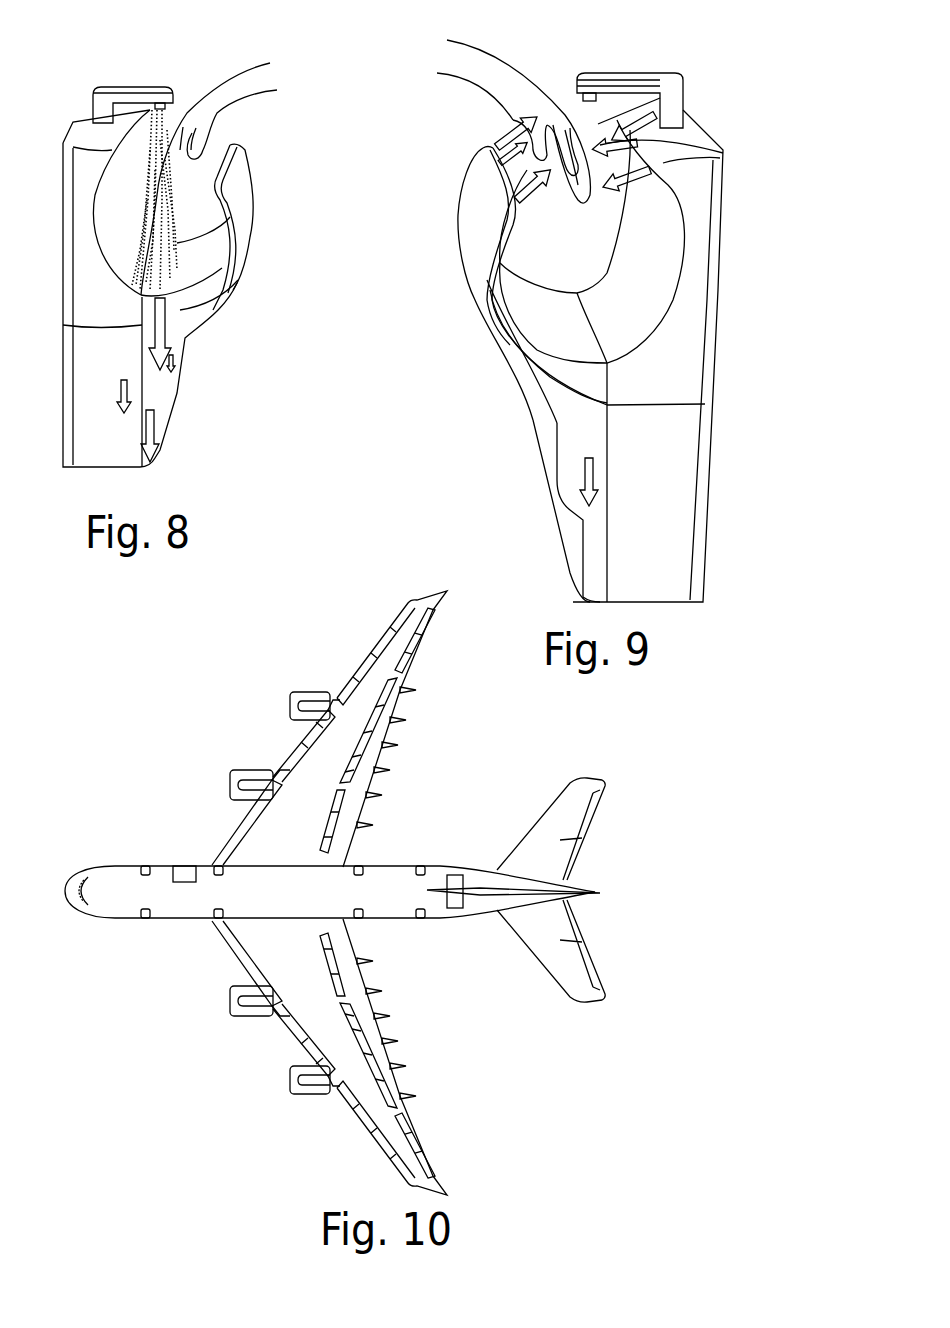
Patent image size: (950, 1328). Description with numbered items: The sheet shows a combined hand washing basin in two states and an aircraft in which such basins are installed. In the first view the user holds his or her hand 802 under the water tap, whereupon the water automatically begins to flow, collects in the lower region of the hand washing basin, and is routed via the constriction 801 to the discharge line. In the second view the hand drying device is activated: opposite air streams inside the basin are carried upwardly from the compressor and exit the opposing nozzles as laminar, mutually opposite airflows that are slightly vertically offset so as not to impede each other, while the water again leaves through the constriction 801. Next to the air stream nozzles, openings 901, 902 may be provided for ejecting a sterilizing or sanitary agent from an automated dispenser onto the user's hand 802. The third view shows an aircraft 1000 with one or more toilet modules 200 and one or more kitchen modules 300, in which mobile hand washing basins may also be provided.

In FIG. 8, the constriction 801 is at (153, 393).
In FIG. 9, the constriction 801 is at (567, 480).
In FIG. 8, the hand 802 is at (228, 92).
In FIG. 9, the hand 802 is at (513, 83).
In FIG. 9, the opening 901 is at (640, 160).
In FIG. 9, the opening 902 is at (490, 177).
In FIG. 10, the aircraft 1000 is at (93, 797).
In FIG. 10, the toilet module 200 is at (187, 873).
In FIG. 10, the kitchen module 300 is at (453, 877).